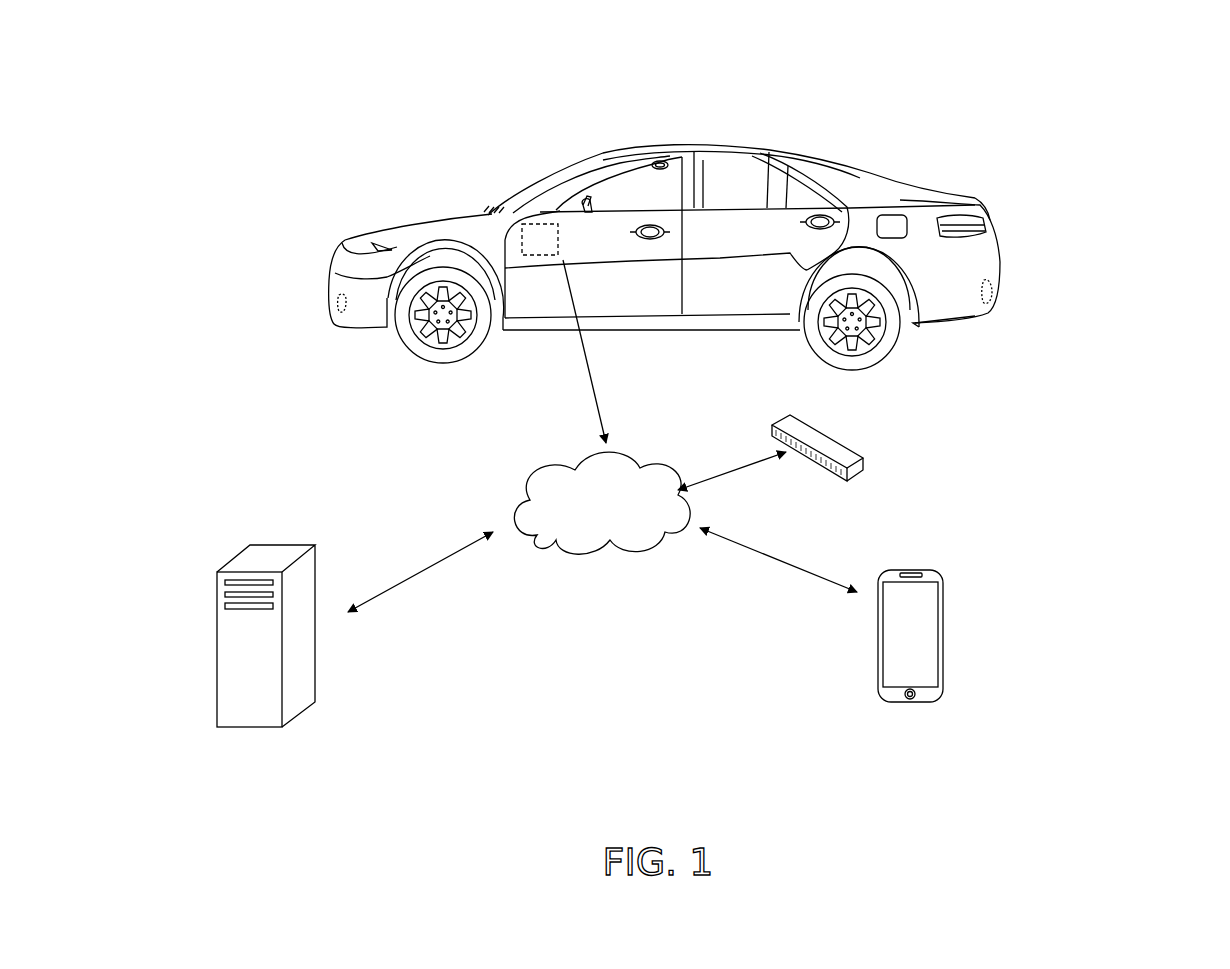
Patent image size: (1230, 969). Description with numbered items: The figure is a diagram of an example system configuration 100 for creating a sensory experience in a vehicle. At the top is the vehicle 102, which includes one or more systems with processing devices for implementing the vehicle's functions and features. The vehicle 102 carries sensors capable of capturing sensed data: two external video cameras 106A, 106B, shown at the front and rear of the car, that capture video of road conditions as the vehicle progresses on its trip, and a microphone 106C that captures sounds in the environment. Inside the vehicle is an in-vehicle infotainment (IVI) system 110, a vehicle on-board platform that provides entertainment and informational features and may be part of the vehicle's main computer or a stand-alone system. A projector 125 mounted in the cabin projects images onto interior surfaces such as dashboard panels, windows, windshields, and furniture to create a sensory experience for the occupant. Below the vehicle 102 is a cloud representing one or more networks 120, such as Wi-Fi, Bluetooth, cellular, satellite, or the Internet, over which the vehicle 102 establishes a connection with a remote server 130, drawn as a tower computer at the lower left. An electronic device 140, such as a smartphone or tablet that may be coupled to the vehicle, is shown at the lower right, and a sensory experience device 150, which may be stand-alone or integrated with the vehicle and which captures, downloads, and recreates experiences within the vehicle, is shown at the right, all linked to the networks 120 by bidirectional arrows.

The system configuration 100 is at (1115, 72).
The vehicle 102 is at (918, 180).
The external video camera 106A is at (322, 297).
The external video camera 106B is at (993, 293).
The microphone 106C is at (572, 205).
The in-vehicle infotainment (IVI) system 110 is at (530, 234).
The networks 120 is at (602, 503).
The projector 125 is at (661, 158).
The remote server 130 is at (266, 652).
The electronic device 140 is at (910, 651).
The sensory experience device 150 is at (825, 448).